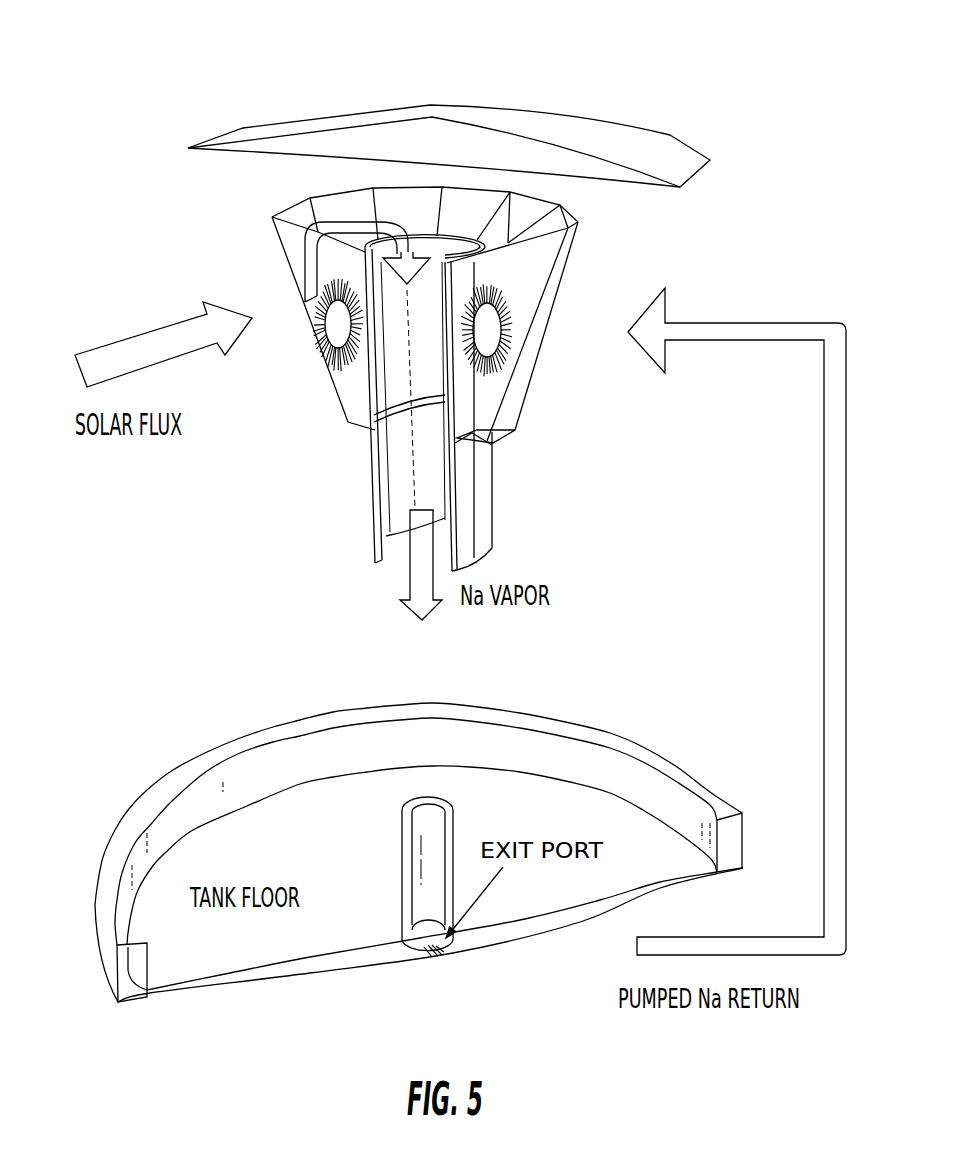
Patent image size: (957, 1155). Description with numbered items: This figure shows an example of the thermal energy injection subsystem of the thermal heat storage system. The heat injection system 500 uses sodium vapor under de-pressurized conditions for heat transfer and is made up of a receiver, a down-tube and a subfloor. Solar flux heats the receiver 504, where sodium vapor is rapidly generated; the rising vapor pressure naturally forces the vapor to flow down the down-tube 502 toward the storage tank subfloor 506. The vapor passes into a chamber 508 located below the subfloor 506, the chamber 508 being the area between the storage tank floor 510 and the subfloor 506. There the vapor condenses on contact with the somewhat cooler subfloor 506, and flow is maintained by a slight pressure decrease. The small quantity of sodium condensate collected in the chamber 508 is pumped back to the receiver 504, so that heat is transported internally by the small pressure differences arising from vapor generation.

The heat injection system 500 is at (361, 80).
The down-tube 502 is at (513, 488).
The receiver 504 is at (508, 298).
The storage tank subfloor 506 is at (218, 958).
The chamber 508 is at (452, 962).
The storage tank floor 510 is at (296, 990).